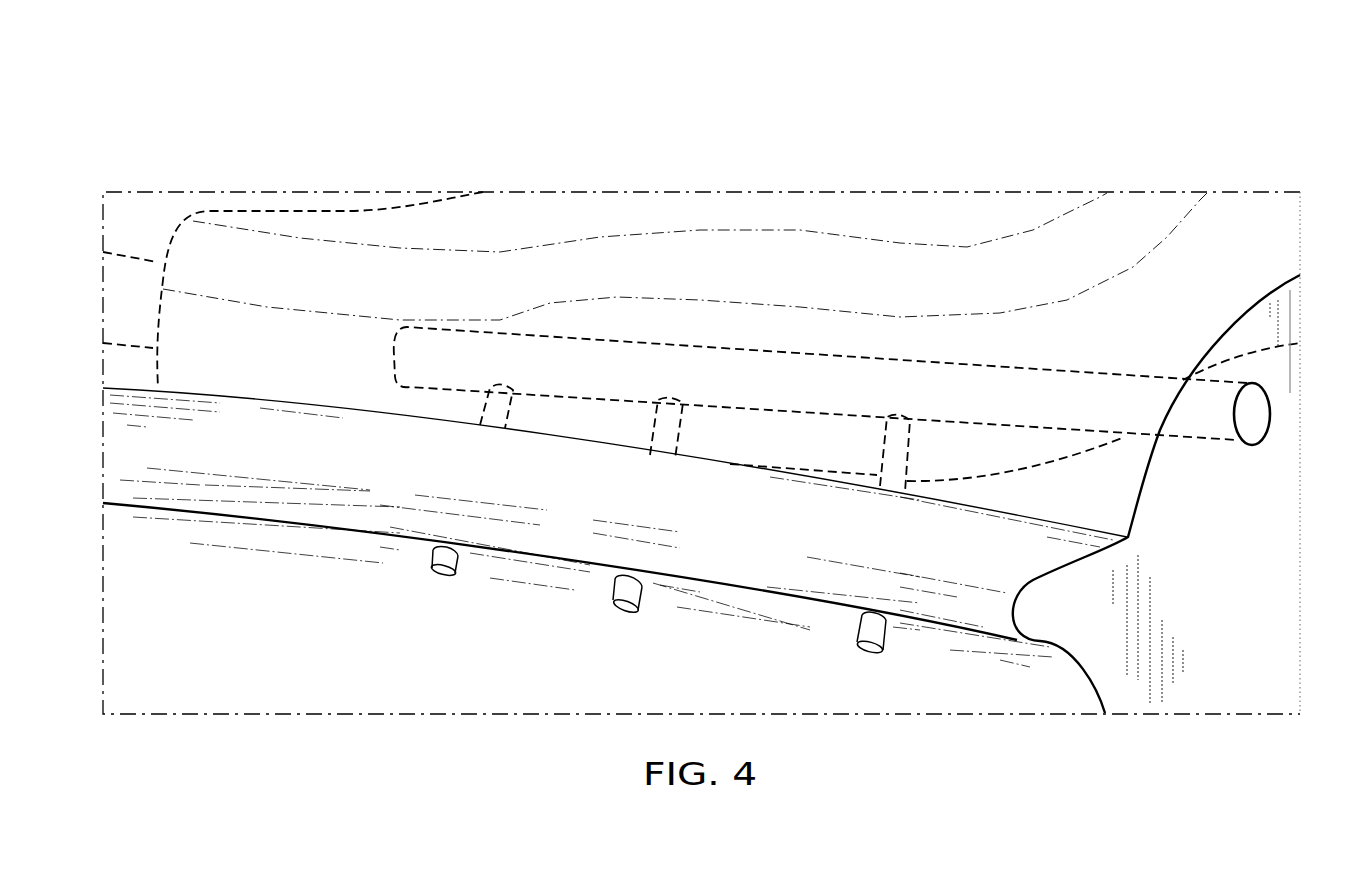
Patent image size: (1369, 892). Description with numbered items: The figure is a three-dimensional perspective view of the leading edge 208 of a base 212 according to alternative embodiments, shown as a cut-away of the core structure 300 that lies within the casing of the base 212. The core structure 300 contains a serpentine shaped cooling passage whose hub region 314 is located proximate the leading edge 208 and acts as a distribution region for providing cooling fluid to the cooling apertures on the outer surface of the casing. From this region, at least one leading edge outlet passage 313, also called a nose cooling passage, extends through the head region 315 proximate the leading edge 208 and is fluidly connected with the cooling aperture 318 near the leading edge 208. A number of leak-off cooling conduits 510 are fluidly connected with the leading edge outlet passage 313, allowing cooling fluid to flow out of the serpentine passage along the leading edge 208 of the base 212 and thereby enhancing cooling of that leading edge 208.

The base 212 is at (584, 190).
The head region 315 is at (336, 294).
The hub region 314 is at (903, 302).
The core structure 300 is at (313, 464).
The leading edge 208 is at (354, 523).
The leak-off cooling conduit 510 is at (444, 574).
The leading edge outlet passage 313 is at (1193, 413).
The cooling aperture 318 is at (1267, 444).